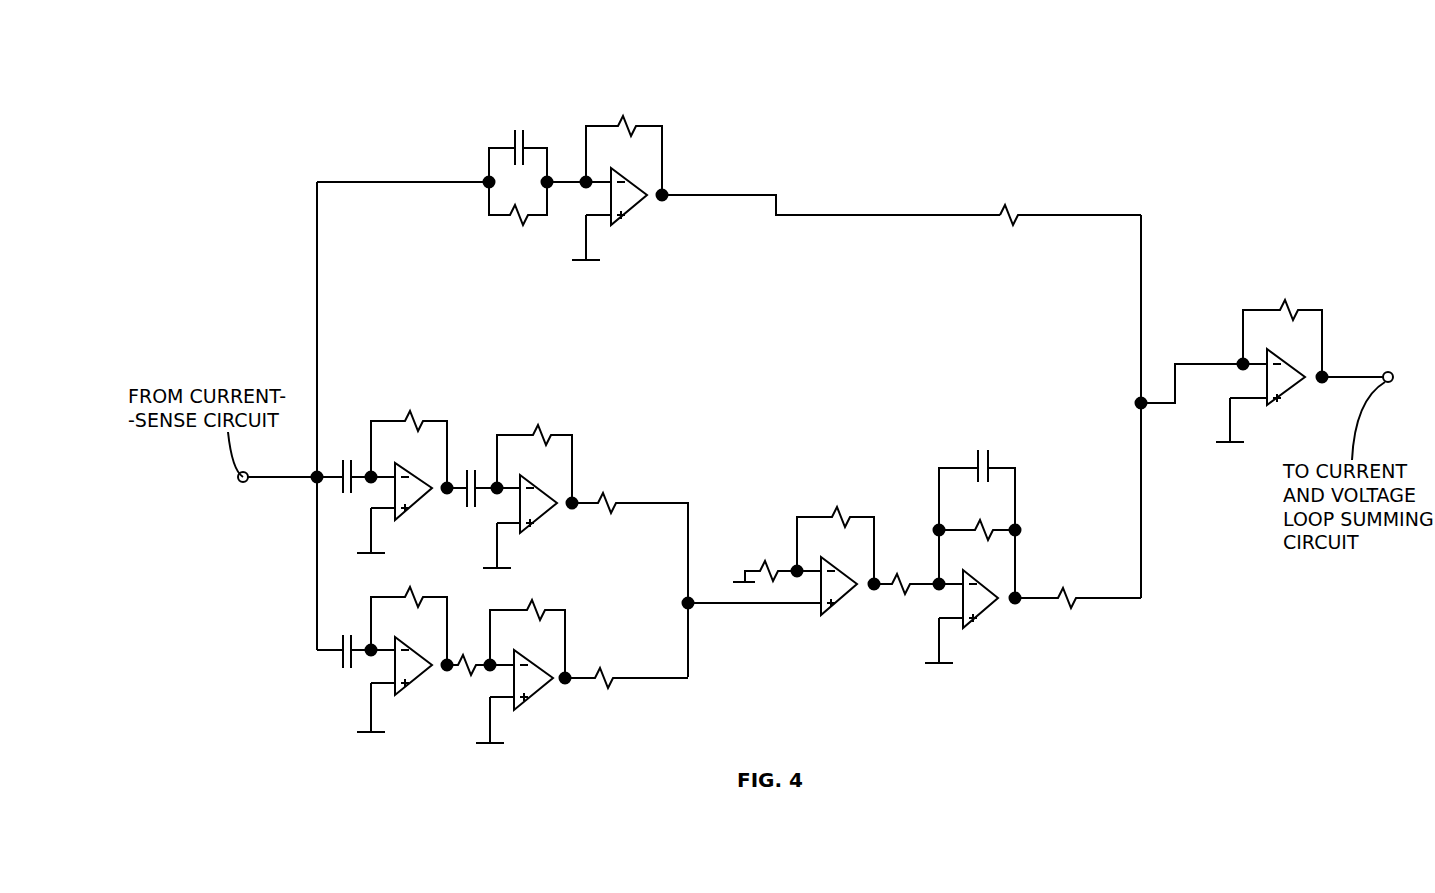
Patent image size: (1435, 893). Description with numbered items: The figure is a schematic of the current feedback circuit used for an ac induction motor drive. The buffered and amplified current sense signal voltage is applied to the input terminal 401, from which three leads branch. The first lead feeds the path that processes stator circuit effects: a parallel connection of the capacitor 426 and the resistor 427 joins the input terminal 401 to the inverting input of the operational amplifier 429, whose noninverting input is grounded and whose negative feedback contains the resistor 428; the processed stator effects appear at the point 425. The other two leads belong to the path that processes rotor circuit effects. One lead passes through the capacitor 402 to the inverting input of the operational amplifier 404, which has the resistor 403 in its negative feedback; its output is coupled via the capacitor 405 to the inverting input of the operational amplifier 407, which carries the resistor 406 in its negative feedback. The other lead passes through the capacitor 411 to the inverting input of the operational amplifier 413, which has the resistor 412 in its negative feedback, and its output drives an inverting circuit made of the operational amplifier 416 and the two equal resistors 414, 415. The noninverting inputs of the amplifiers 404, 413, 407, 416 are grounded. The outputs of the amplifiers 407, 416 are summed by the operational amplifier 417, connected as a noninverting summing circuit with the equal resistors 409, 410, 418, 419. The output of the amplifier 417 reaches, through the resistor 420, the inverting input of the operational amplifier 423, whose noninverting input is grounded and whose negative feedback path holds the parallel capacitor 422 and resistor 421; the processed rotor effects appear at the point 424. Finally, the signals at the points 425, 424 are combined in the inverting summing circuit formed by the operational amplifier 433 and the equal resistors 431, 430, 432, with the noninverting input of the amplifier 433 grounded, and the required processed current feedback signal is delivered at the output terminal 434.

The input terminal 401 is at (240, 482).
The capacitor 402 is at (343, 458).
The resistor 403 is at (412, 416).
The operational amplifier 404 is at (418, 498).
The capacitor 405 is at (468, 470).
The resistor 406 is at (542, 432).
The operational amplifier 407 is at (558, 512).
The resistor 409 is at (608, 490).
The resistor 410 is at (600, 668).
The capacitor 411 is at (345, 634).
The resistor 412 is at (412, 592).
The operational amplifier 413 is at (414, 684).
The resistor 414 is at (466, 660).
The resistor 415 is at (536, 600).
The operational amplifier 416 is at (540, 686).
The operational amplifier 417 is at (848, 598).
The resistor 418 is at (760, 566).
The resistor 419 is at (840, 508).
The resistor 420 is at (896, 574).
The resistor 421 is at (980, 522).
The capacitor 422 is at (976, 458).
The operational amplifier 423 is at (990, 612).
The point 424 is at (1020, 594).
The point 425 is at (663, 190).
The capacitor 426 is at (516, 130).
The resistor 427 is at (516, 222).
The resistor 428 is at (618, 143).
The operational amplifier 429 is at (636, 205).
The resistor 430 is at (1064, 592).
The resistor 431 is at (1014, 208).
The resistor 432 is at (1288, 306).
The operational amplifier 433 is at (1292, 388).
The output terminal 434 is at (1386, 373).